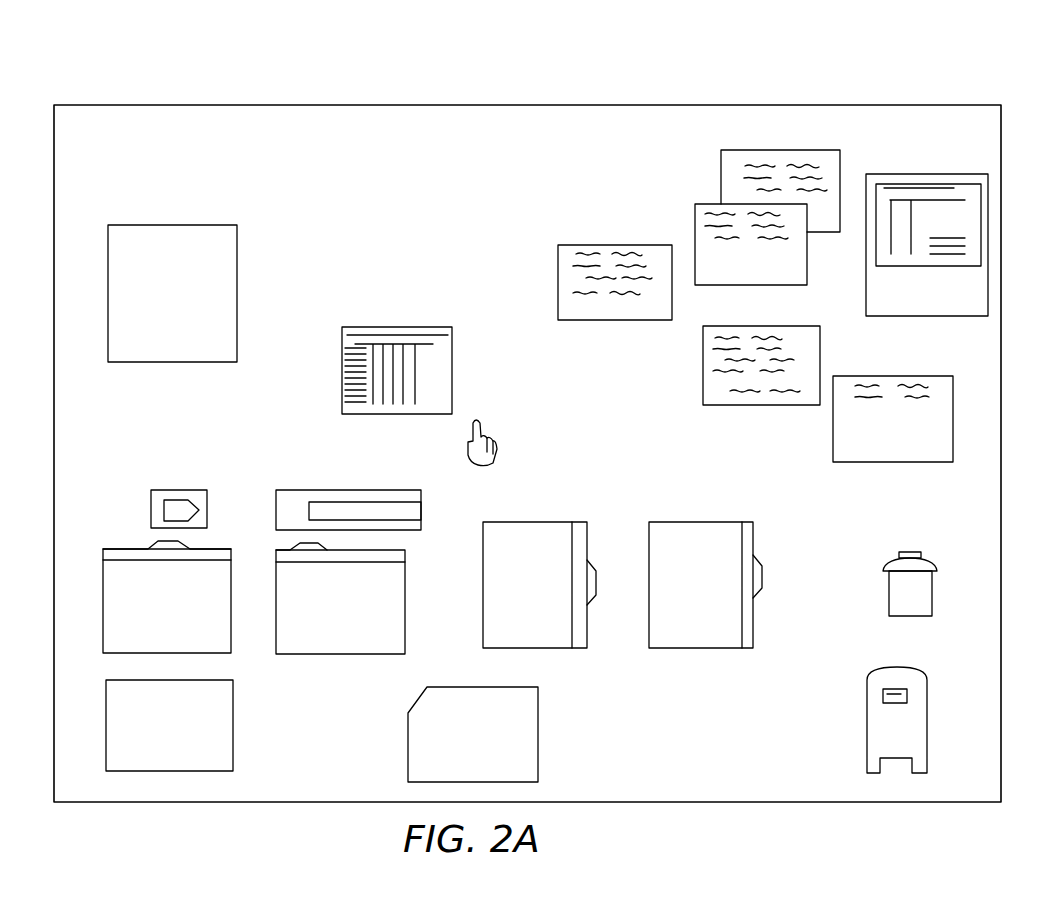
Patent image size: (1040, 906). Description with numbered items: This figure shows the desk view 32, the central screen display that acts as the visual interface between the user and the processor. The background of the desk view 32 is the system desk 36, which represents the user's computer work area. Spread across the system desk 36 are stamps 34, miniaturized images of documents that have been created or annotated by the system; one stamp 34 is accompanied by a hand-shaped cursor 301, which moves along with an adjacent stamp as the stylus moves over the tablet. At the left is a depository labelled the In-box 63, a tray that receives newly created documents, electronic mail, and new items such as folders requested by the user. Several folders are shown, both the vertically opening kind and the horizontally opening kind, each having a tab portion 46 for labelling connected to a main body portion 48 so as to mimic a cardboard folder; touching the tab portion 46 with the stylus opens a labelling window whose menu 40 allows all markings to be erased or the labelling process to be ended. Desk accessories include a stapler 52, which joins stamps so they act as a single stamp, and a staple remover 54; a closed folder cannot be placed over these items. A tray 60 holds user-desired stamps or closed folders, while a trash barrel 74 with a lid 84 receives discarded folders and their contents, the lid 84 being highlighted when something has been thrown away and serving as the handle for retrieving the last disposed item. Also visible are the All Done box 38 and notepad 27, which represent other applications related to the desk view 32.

The desk view 32 is at (466, 80).
The system desk 36 is at (722, 105).
The In-box 63 is at (237, 272).
The stamps 34 is at (568, 281).
The tray 60 is at (930, 304).
The cursor 301 is at (497, 455).
The staple remover 54 is at (168, 490).
The stapler 52 is at (330, 490).
The main body portion 48 is at (254, 614).
The tab portion 46 is at (168, 549).
The menu 40 is at (550, 553).
The all done box 38 is at (182, 717).
The notepad 27 is at (492, 731).
The lid 84 is at (901, 556).
The trash barrel 74 is at (927, 566).